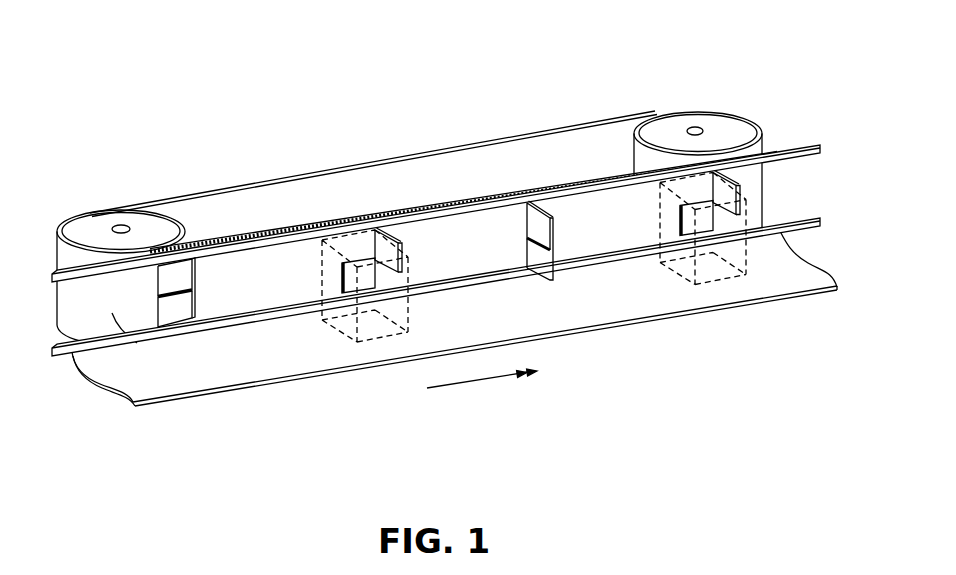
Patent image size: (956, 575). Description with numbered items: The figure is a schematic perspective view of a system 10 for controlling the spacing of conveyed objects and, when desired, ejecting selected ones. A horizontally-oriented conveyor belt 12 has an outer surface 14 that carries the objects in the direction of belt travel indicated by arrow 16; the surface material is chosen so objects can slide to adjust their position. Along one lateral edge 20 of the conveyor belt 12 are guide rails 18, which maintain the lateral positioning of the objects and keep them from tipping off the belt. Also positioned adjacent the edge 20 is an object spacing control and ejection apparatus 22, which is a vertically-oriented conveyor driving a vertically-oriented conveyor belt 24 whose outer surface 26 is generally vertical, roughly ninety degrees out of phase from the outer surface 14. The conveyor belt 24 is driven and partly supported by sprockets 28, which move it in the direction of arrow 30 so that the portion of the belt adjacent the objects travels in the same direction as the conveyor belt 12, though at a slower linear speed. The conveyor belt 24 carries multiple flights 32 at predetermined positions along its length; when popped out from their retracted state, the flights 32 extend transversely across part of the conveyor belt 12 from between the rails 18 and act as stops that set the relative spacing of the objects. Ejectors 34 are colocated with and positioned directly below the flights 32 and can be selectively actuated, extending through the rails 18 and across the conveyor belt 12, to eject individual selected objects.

The system 10 is at (112, 62).
The horizontally-oriented conveyor belt 12 is at (490, 326).
The outer surface 14 is at (217, 380).
The direction of belt travel 16 is at (463, 383).
The guide rails 18 is at (777, 153).
The lateral edge 20 is at (120, 318).
The object spacing control and ejection apparatus 22 is at (192, 158).
The vertically-oriented conveyor belt 24 is at (360, 163).
The outer surface 26 is at (597, 238).
The sprockets 28 is at (95, 220).
The direction of belt travel 30 is at (472, 185).
The flights 32 is at (185, 275).
The ejectors 34 is at (185, 305).